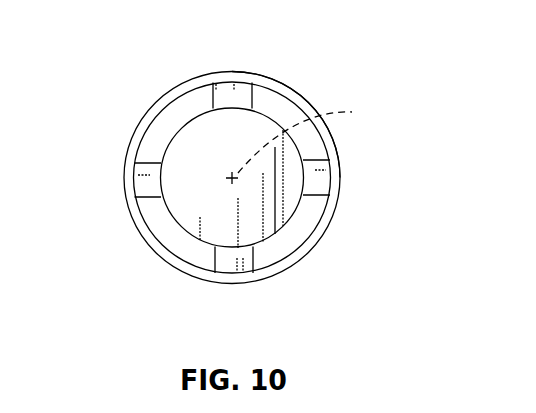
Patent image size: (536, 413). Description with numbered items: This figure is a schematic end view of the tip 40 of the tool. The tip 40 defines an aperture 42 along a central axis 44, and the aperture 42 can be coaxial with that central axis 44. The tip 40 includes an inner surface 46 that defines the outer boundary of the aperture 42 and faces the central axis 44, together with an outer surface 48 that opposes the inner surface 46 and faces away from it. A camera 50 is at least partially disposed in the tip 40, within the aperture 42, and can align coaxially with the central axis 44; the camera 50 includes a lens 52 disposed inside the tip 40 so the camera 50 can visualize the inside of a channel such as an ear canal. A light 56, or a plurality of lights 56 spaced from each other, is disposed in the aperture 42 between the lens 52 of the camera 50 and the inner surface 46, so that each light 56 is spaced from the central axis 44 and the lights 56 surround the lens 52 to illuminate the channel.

The tip 40 is at (170, 98).
The aperture 42 is at (148, 140).
The central axis 44 is at (349, 113).
The inner surface 46 is at (160, 240).
The outer surface 48 is at (298, 90).
The camera 50 is at (299, 198).
The lens 52 is at (268, 213).
The light 56 is at (240, 83).